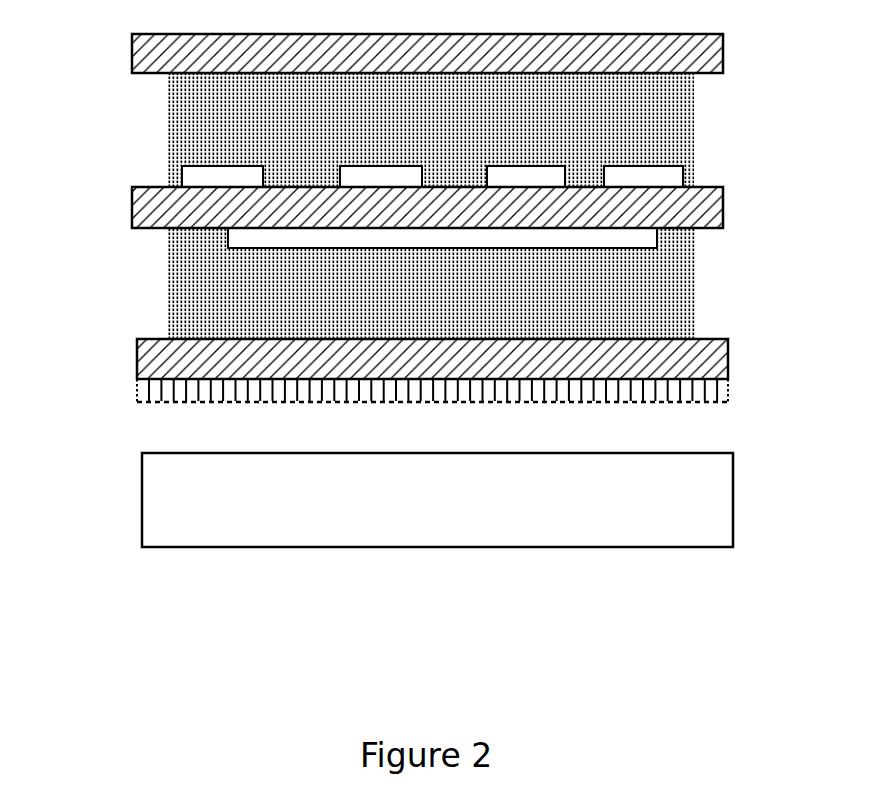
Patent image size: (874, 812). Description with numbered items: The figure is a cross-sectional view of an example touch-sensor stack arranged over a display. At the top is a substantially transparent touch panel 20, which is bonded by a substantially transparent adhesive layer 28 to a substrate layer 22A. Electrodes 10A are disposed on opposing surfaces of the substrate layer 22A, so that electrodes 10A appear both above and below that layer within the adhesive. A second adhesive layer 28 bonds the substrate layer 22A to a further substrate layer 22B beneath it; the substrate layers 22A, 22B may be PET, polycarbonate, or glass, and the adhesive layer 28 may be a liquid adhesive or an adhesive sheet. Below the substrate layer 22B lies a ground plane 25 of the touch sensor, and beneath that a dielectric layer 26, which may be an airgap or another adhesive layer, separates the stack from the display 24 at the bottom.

The touch panel 20 is at (131, 71).
The adhesive layer 28 is at (178, 133).
The electrodes 10A is at (682, 168).
The substrate layer 22A is at (132, 226).
The substrate layer 22B is at (719, 366).
The ground plane 25 is at (142, 402).
The dielectric layer 26 is at (168, 437).
The display 24 is at (694, 547).